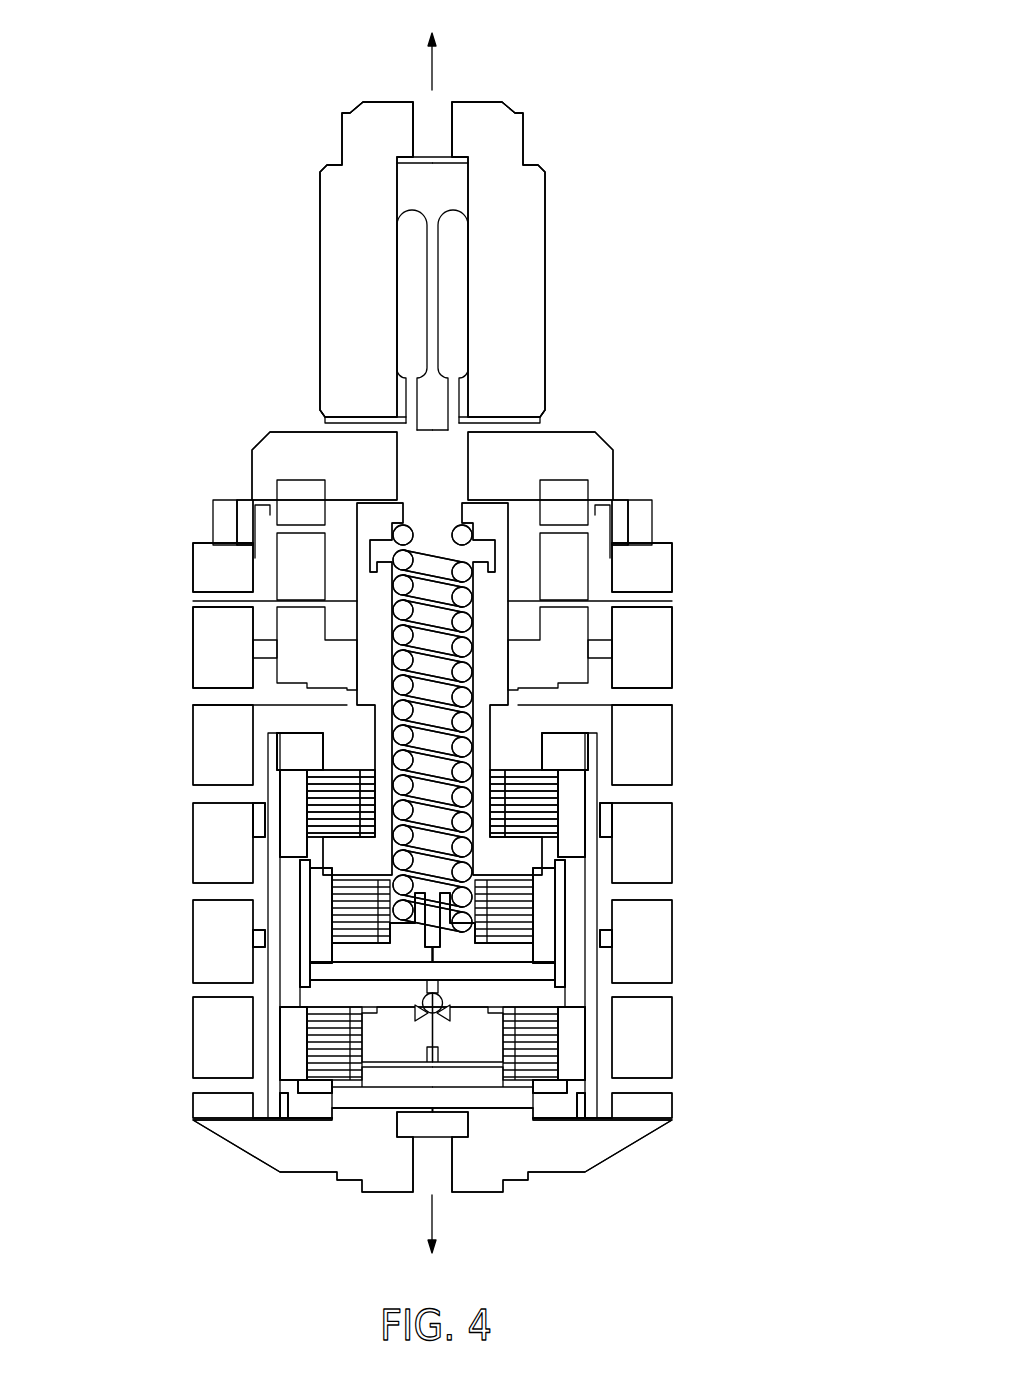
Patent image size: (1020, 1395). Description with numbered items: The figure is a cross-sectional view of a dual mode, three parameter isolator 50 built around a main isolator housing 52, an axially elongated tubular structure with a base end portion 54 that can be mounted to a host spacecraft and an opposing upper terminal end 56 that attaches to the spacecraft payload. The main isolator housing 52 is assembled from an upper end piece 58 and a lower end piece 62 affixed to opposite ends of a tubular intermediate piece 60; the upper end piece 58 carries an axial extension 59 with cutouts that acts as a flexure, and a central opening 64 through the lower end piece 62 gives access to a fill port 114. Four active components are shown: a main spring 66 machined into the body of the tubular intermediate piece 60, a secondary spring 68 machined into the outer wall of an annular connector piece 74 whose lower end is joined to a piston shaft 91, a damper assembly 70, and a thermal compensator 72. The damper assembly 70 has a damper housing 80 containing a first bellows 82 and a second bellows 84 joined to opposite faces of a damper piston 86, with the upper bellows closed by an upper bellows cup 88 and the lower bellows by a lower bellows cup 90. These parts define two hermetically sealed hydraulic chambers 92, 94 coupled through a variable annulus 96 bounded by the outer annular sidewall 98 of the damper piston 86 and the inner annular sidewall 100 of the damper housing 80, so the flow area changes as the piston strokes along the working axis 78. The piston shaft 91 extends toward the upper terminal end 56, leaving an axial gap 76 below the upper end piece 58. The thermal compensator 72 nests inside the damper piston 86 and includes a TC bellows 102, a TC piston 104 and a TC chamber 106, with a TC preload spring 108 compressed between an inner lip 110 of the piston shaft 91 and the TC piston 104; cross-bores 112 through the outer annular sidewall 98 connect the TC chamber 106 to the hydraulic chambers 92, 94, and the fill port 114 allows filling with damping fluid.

The three parameter isolator 50 is at (218, 162).
The main isolator housing 52 is at (617, 495).
The base end portion 54 is at (500, 1190).
The upper terminal end 56 is at (495, 108).
The upper end piece 58 is at (600, 450).
The axial extension 59 is at (537, 215).
The tubular intermediate piece 60 is at (663, 563).
The lower end piece 62 is at (421, 131).
The central opening 64 is at (435, 1170).
The main spring 66 is at (110, 540).
The secondary spring 68 is at (188, 480).
The damper assembly 70 is at (730, 757).
The thermal compensator 72 is at (280, 923).
The annular connector piece 74 is at (578, 633).
The axial gap 76 is at (380, 500).
The working axis 78 is at (436, 68).
The damper housing 80 is at (272, 827).
The first bellows 82 is at (310, 792).
The second bellows 84 is at (308, 1058).
The damper piston 86 is at (527, 853).
The upper bellows cup 88 is at (347, 757).
The lower bellows cup 90 is at (332, 1090).
The piston shaft 91 is at (478, 742).
The hydraulic chamber 92 is at (577, 782).
The hydraulic chamber 94 is at (573, 1028).
The variable annulus 96 is at (572, 902).
The outer annular sidewall 98 is at (560, 962).
The inner annular sidewall 100 is at (590, 863).
The thermal compensator bellows 102 is at (350, 887).
The thermal compensator piston 104 is at (505, 957).
The thermal compensator chamber 106 is at (405, 970).
The thermal compensator preload spring 108 is at (466, 701).
The inner lip 110 is at (492, 505).
The cross-bores 112 is at (300, 920).
The fill port 114 is at (467, 1053).